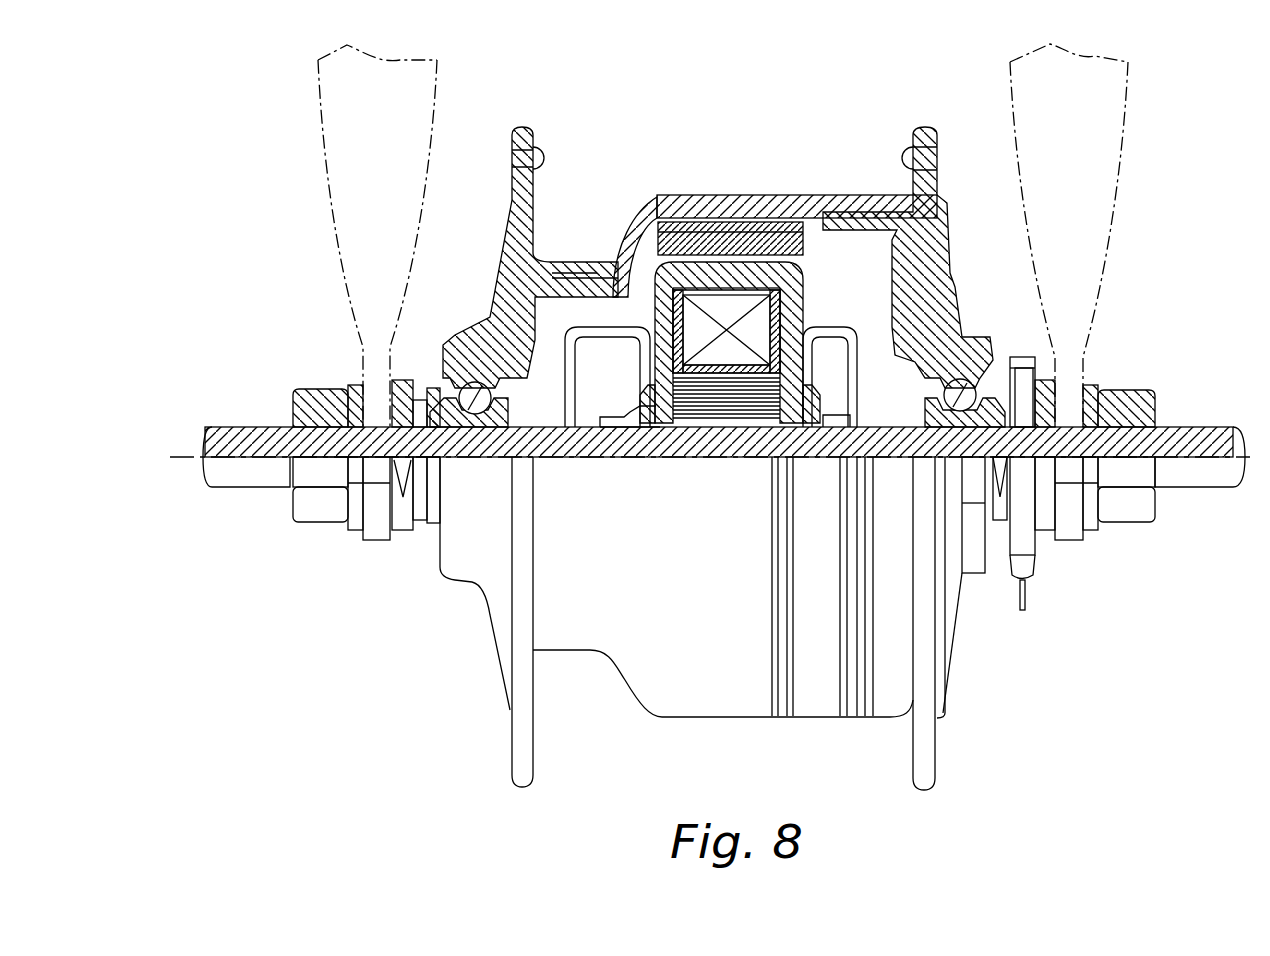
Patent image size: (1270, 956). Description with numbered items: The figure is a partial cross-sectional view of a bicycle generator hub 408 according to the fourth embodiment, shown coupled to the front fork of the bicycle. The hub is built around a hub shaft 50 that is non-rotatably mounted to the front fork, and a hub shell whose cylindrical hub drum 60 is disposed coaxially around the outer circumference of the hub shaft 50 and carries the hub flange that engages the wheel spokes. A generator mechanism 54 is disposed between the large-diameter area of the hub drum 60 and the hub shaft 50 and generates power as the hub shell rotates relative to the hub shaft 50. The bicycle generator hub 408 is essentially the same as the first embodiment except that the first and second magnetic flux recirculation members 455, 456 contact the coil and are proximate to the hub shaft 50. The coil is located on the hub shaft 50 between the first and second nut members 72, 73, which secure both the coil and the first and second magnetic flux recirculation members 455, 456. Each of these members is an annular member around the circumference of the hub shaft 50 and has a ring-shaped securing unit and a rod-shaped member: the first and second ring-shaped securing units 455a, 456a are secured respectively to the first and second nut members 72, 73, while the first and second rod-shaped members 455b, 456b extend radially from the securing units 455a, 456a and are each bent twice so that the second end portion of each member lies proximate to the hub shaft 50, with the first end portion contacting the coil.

The hub shaft 50 is at (243, 455).
The generator mechanism 54 is at (647, 248).
The hub drum 60 is at (735, 198).
The first nut member 72 is at (607, 422).
The second nut member 73 is at (823, 420).
The bicycle generator hub 408 is at (978, 726).
The first magnetic flux recirculation member 455 is at (620, 327).
The first ring-shaped securing unit 455a is at (657, 425).
The first rod-shaped member 455b is at (582, 333).
The second magnetic flux recirculation member 456 is at (828, 327).
The second ring-shaped securing unit 456a is at (775, 430).
The second rod-shaped member 456b is at (857, 327).